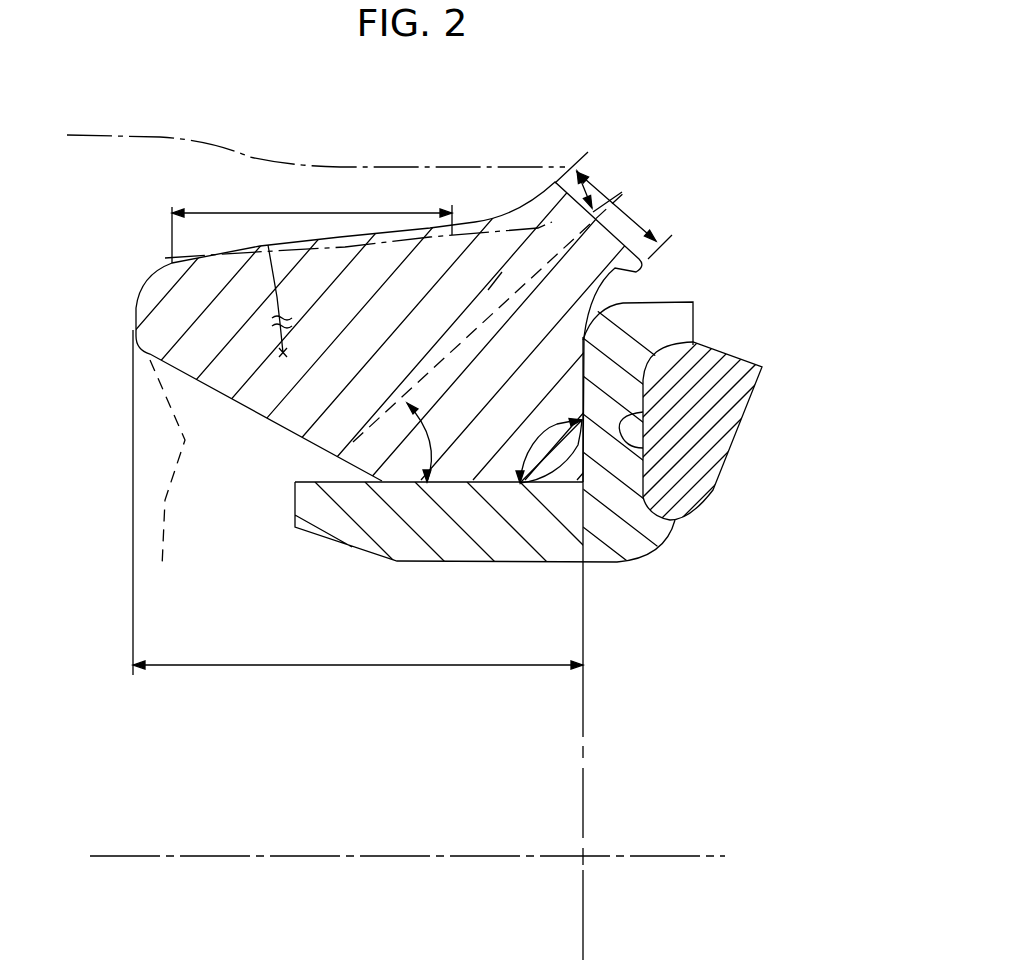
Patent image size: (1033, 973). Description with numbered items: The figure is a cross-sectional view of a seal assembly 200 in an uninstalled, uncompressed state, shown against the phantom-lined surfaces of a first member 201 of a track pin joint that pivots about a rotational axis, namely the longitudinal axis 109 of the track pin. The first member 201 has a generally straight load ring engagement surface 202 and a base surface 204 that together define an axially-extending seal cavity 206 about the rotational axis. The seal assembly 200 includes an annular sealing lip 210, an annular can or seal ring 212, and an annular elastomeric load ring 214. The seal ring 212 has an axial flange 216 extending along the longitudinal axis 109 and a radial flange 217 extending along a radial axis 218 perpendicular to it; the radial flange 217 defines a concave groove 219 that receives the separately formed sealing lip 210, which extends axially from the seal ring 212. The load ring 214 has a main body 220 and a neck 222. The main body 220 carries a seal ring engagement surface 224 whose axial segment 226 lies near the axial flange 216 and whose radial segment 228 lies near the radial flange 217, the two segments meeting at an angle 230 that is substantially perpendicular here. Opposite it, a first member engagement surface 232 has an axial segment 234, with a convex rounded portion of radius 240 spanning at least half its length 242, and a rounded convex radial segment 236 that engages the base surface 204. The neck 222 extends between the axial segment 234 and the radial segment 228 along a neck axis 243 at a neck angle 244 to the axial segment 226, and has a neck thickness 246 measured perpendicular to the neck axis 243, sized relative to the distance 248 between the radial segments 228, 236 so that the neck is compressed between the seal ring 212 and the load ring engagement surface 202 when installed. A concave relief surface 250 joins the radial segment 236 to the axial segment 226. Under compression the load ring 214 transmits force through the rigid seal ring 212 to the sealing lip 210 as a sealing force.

The longitudinal axis 109 is at (697, 858).
The seal assembly 200 is at (673, 173).
The first member 201 is at (346, 190).
The load ring engagement surface 202 is at (360, 243).
The base surface 204 is at (166, 547).
The seal cavity 206 is at (173, 395).
The sealing lip 210 is at (718, 492).
The seal ring 212 is at (547, 552).
The load ring 214 is at (587, 210).
The axial flange 216 is at (522, 538).
The radial flange 217 is at (640, 342).
The radial axis 218 is at (578, 892).
The concave groove 219 is at (650, 451).
The main body 220 is at (360, 331).
The neck 222 is at (615, 268).
The seal ring engagement surface 224 is at (440, 486).
The axial segment 226 is at (470, 482).
The radial segment 228 is at (580, 422).
The angle 230 is at (573, 422).
The first member engagement surface 232 is at (323, 225).
The axial segment 234 is at (455, 232).
The radial segment 236 is at (136, 307).
The radius 240 is at (275, 290).
The length 242 is at (207, 212).
The neck axis 243 is at (488, 308).
The neck angle 244 is at (432, 408).
The neck thickness 246 is at (655, 222).
The distance 248 is at (318, 686).
The relief surface 250 is at (278, 410).